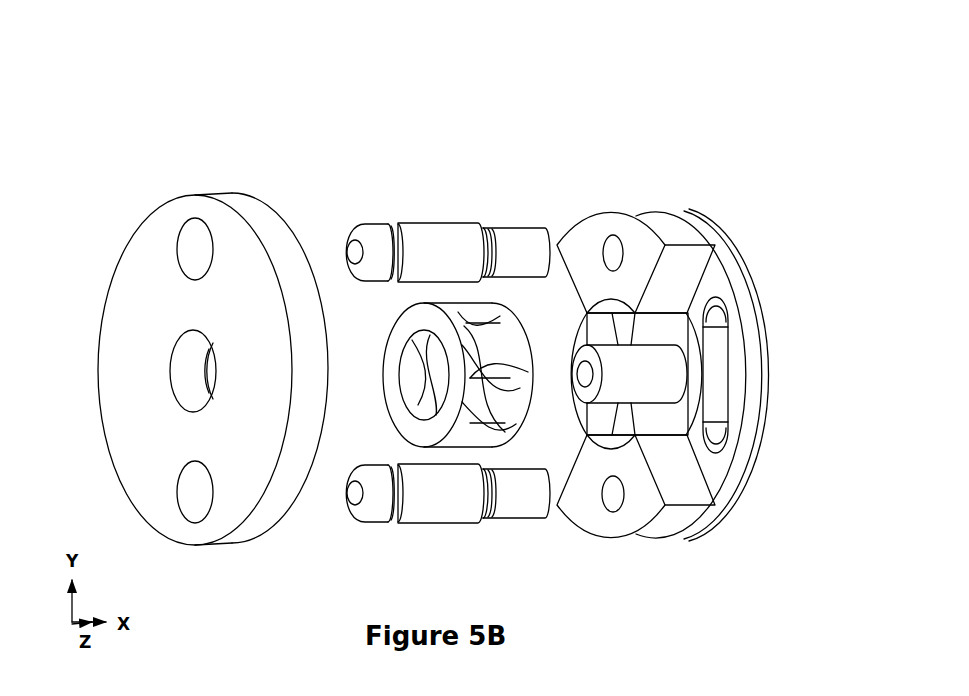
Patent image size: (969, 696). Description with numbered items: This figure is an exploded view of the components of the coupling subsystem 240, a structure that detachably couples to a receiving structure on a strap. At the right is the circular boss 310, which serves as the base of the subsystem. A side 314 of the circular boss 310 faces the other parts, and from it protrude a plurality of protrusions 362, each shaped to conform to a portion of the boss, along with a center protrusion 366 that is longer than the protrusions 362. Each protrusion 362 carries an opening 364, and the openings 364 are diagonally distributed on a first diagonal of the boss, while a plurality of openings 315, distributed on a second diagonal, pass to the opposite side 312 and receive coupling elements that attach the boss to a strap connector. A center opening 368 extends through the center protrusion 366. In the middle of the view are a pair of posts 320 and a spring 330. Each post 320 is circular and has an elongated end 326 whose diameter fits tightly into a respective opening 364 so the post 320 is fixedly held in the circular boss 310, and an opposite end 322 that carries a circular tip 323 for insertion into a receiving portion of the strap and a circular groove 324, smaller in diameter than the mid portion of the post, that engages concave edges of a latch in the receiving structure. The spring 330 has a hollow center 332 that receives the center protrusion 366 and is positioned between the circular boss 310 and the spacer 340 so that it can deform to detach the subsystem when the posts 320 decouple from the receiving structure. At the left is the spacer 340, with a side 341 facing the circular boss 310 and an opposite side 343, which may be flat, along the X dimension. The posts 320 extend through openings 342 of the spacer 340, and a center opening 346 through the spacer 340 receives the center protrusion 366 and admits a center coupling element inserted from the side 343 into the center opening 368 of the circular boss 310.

The coupling subsystem 240 is at (156, 90).
The circular boss 310 is at (678, 143).
The side of the circular boss 312 is at (785, 483).
The side of the circular boss 314 is at (590, 518).
The openings 315 is at (716, 317).
The post 320 is at (450, 178).
The end of the post 322 is at (383, 202).
The tip 323 is at (372, 230).
The groove 324 is at (399, 230).
The end of the post 326 is at (513, 220).
The spring 330 is at (504, 322).
The hollow center 332 is at (406, 369).
The spacer 340 is at (248, 205).
The side of the spacer 341 is at (335, 500).
The opening of the spacer 342 is at (192, 237).
The side of the spacer 343 is at (168, 528).
The center opening of the spacer 346 is at (209, 368).
The protrusion 362 is at (654, 225).
The opening 364 is at (614, 242).
The center protrusion 366 is at (662, 369).
The center opening 368 is at (575, 371).